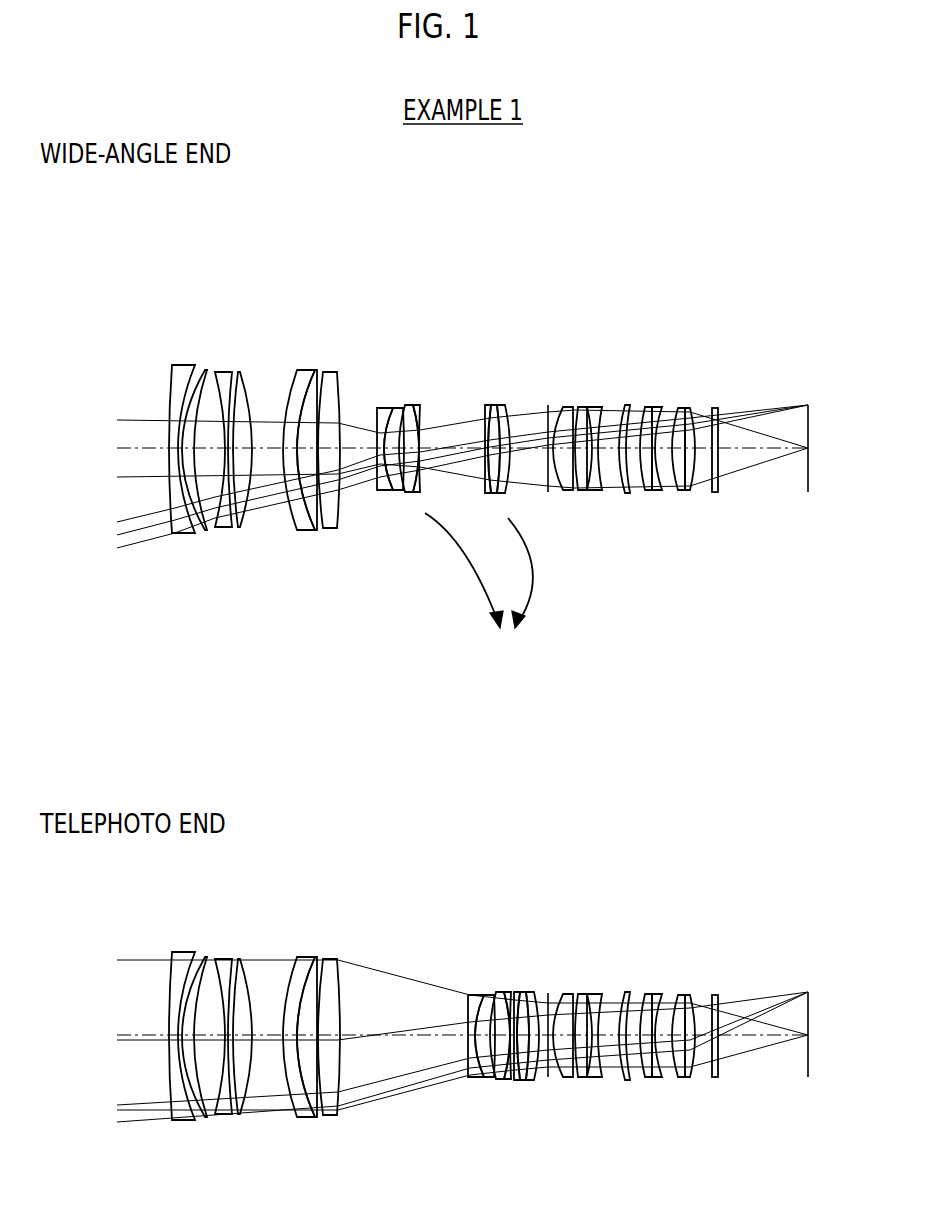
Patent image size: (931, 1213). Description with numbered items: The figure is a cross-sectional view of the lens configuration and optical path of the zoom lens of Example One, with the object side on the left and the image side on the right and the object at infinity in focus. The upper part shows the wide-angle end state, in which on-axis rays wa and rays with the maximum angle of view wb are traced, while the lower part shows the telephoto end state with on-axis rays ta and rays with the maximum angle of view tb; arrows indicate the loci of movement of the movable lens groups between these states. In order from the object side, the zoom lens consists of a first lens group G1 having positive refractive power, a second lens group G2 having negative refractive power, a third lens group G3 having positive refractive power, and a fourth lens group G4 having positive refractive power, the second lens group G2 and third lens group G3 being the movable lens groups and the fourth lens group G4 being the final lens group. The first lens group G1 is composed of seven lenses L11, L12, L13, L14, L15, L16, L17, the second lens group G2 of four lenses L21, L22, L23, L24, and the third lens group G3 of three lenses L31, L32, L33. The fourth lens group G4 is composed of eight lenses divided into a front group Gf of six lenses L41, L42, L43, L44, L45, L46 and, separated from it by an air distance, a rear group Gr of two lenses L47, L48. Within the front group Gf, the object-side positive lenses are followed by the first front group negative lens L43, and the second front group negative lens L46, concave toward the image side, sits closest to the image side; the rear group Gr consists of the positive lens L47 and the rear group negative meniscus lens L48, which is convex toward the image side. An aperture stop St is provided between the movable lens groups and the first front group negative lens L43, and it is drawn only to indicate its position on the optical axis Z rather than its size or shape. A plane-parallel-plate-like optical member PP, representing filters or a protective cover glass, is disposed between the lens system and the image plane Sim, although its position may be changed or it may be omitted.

The lens L11 is at (180, 375).
The lens L12 is at (200, 368).
The lens L13 is at (218, 372).
The lens L14 is at (238, 372).
The lens L15 is at (302, 370).
The lens L16 is at (310, 368).
The lens L17 is at (337, 372).
The lens L21 is at (383, 406).
The lens L22 is at (396, 406).
The lens L23 is at (408, 404).
The lens L24 is at (418, 404).
The lens L31 is at (489, 404).
The lens L32 is at (498, 404).
The lens L33 is at (507, 404).
The lens L41 is at (572, 406).
The lens L42 is at (585, 406).
The first front group negative lens L43 is at (602, 406).
The lens L44 is at (633, 404).
The lens L45 is at (658, 406).
The second front group negative lens L46 is at (673, 406).
The positive lens L47 is at (703, 406).
The rear group negative meniscus lens L48 is at (720, 407).
The first lens group G1 is at (345, 265).
The second lens group G2 is at (478, 265).
The third lens group G3 is at (582, 265).
The fourth lens group G4 is at (694, 630).
The front group Gf is at (765, 265).
The rear group Gr is at (753, 651).
The aperture stop St is at (546, 493).
The optical member PP is at (720, 493).
The image plane Sim is at (811, 493).
The optical axis Z is at (122, 440).
The on-axis rays wa is at (107, 412).
The rays with the maximum angle of view wb is at (107, 513).
The on-axis rays ta is at (72, 958).
The rays with the maximum angle of view tb is at (109, 1040).